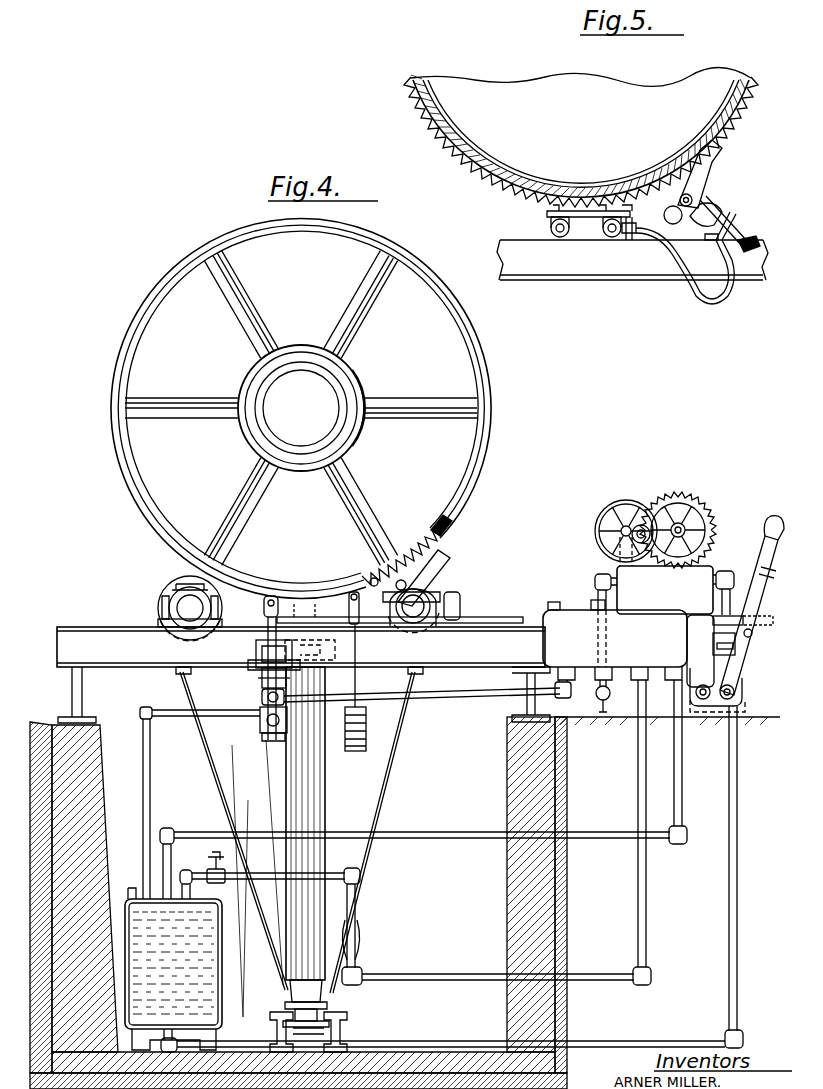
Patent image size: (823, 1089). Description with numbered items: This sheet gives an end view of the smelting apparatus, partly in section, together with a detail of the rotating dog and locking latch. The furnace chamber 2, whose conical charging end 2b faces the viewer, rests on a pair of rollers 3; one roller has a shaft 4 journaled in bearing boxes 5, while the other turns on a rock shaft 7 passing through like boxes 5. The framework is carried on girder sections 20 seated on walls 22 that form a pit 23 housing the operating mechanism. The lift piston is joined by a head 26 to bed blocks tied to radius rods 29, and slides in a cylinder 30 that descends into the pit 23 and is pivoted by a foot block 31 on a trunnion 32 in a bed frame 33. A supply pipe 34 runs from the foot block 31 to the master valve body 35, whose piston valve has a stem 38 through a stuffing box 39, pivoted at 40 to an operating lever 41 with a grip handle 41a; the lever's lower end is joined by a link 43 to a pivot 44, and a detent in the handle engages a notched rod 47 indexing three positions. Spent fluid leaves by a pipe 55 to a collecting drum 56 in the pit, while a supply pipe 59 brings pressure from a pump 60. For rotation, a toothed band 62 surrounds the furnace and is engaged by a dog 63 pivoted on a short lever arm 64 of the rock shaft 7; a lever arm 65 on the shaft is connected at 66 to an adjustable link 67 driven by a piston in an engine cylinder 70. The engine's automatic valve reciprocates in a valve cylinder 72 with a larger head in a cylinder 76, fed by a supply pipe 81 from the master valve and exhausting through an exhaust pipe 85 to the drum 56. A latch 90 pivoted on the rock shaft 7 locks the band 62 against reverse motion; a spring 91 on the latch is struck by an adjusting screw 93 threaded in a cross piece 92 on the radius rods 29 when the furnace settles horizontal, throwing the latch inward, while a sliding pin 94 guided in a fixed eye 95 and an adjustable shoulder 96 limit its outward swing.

In FIG. 5, the furnace chamber 2 is at (433, 117).
In FIG. 4, the furnace chamber 2 is at (416, 285).
In FIG. 4, the charging end 2b is at (362, 389).
In FIG. 4, the rollers 3 is at (438, 604).
In FIG. 4, the shaft 4 is at (164, 606).
In FIG. 4, the bearing boxes 5 is at (454, 600).
In FIG. 5, the rock shaft 7 is at (698, 246).
In FIG. 4, the rock shaft 7 is at (418, 628).
In FIG. 4, the girder sections 20 is at (80, 694).
In FIG. 4, the walls 22 is at (99, 728).
In FIG. 4, the pit 23 is at (450, 893).
In FIG. 4, the head 26 is at (322, 623).
In FIG. 5, the radius rods 29 is at (551, 229).
In FIG. 4, the cylinder 30 is at (314, 800).
In FIG. 4, the foot block 31 is at (290, 988).
In FIG. 4, the trunnion 32 is at (320, 1002).
In FIG. 4, the bed frame 33 is at (340, 1030).
In FIG. 4, the supply pipe 34 is at (385, 976).
In FIG. 4, the valve body 35 is at (600, 640).
In FIG. 4, the stem 38 is at (735, 660).
In FIG. 4, the stuffing box 39 is at (733, 647).
In FIG. 4, the pivot connection 40 is at (752, 633).
In FIG. 4, the operating lever 41 is at (766, 578).
In FIG. 4, the grip handle 41a is at (777, 546).
In FIG. 4, the link 43 is at (728, 707).
In FIG. 4, the pivot 44 is at (734, 690).
In FIG. 4, the notched rod 47 is at (712, 614).
In FIG. 4, the pipe 55 is at (674, 706).
In FIG. 4, the collecting drum 56 is at (222, 1012).
In FIG. 4, the supply pipe 59 is at (610, 700).
In FIG. 4, the pump 60 is at (625, 583).
In FIG. 4, the toothed band 62 is at (444, 542).
In FIG. 5, the dog 63 is at (692, 196).
In FIG. 4, the dog 63 is at (401, 580).
In FIG. 5, the lever arm 64 is at (664, 215).
In FIG. 4, the lever arm 64 is at (372, 580).
In FIG. 4, the lever arm 65 is at (312, 612).
In FIG. 4, the connection 66 is at (264, 606).
In FIG. 4, the adjustable link 67 is at (268, 629).
In FIG. 4, the engine cylinder 70 is at (258, 652).
In FIG. 4, the valve cylinder 72 is at (262, 696).
In FIG. 4, the cylinder 76 is at (262, 676).
In FIG. 4, the supply pipe 81 is at (472, 700).
In FIG. 4, the exhaust pipe 85 is at (262, 720).
In FIG. 5, the latch 90 is at (718, 176).
In FIG. 4, the latch 90 is at (438, 565).
In FIG. 5, the spring 91 is at (706, 300).
In FIG. 5, the cross piece 92 is at (590, 211).
In FIG. 5, the adjusting screw 93 is at (630, 240).
In FIG. 5, the sliding pin 94 is at (724, 210).
In FIG. 5, the eye 95 is at (750, 240).
In FIG. 5, the adjustable shoulder 96 is at (708, 240).